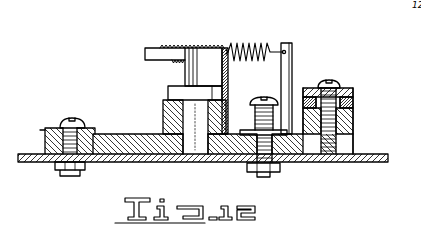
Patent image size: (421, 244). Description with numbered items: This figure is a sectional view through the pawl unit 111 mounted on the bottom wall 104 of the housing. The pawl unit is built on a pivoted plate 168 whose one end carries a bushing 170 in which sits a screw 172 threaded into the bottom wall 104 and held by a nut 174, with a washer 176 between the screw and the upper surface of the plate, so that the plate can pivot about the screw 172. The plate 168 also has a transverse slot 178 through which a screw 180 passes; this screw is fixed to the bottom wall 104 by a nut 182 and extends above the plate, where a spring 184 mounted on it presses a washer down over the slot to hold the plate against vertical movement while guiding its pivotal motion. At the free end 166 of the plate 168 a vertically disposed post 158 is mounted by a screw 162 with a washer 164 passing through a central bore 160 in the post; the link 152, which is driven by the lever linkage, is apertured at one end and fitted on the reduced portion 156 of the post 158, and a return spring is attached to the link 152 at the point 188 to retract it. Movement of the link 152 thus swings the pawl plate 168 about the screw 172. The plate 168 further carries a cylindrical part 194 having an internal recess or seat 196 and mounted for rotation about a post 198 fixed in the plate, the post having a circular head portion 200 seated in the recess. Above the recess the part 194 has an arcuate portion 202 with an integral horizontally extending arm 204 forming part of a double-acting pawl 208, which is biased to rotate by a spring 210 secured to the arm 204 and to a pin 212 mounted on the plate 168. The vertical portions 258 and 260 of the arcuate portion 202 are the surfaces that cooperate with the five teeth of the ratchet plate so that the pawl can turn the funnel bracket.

The bottom wall 104 is at (383, 163).
The pawl unit 111 is at (108, 66).
The link 152 is at (353, 100).
The reduced portion 156 is at (347, 104).
The post 158 is at (352, 121).
The central bore 160 is at (353, 133).
The screw 162 is at (332, 83).
The washer 164 is at (345, 92).
The free end 166 is at (353, 147).
The pivoted plate 168 is at (312, 156).
The bushing 170 is at (96, 137).
The screw 172 is at (79, 121).
The nut 174 is at (56, 168).
The washer 176 is at (50, 128).
The transverse slot 178 is at (251, 163).
The screw 180 is at (272, 97).
The nut 182 is at (273, 172).
The spring 184 is at (257, 103).
The spring attachment point 188 is at (245, 130).
The cylindrical part 194 is at (163, 111).
The internal recess 196 is at (186, 85).
The post 198 is at (195, 140).
The circular head portion 200 is at (168, 93).
The arcuate portion 202 is at (203, 47).
The arm 204 is at (146, 51).
The double-acting pawl 208 is at (157, 47).
The spring 210 is at (252, 47).
The pin 212 is at (287, 46).
The vertical portion 258 is at (177, 63).
The vertical portion 260 is at (230, 44).